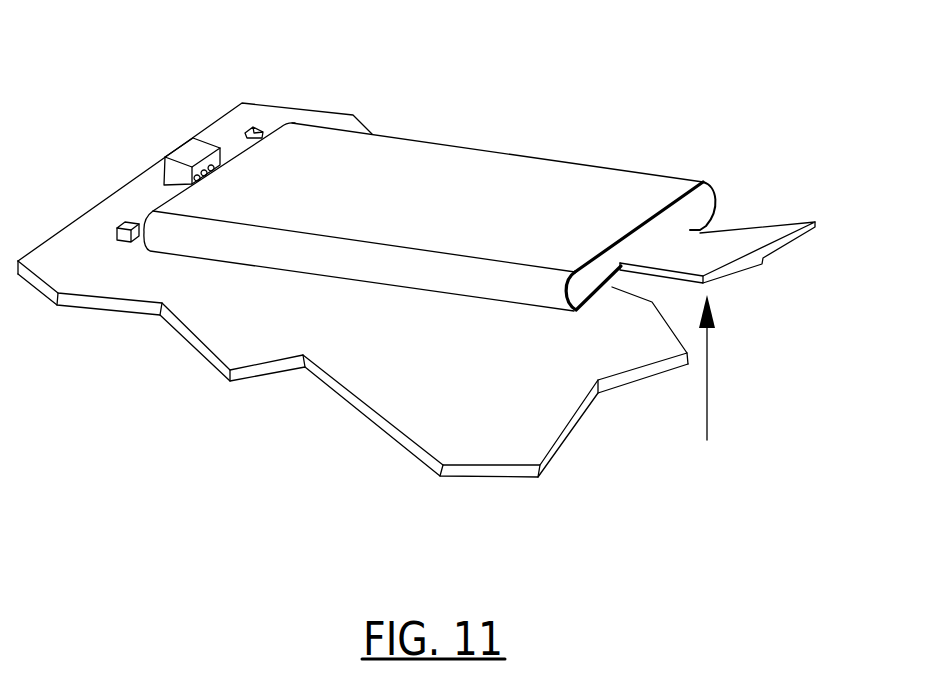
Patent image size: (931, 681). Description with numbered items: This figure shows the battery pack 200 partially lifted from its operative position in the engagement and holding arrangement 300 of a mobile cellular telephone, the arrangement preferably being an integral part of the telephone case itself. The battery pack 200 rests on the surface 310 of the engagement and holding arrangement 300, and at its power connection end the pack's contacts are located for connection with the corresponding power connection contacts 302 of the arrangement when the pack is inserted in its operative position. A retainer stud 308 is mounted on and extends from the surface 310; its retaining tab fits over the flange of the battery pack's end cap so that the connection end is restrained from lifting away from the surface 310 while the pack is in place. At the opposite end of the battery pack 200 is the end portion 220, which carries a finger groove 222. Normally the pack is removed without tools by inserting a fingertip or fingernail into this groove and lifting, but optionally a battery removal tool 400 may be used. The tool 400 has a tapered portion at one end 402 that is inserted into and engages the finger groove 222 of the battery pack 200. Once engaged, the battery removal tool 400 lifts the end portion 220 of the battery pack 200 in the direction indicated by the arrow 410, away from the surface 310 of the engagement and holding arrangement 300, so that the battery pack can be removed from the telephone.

The battery pack 200 is at (445, 126).
The end portion of the battery pack 220 is at (633, 155).
The finger groove 222 is at (623, 273).
The engagement and holding arrangement 300 is at (340, 407).
The power connection contacts 302 is at (176, 141).
The retainer stud 308 is at (119, 246).
The surface of the engagement and holding arrangement 310 is at (488, 395).
The battery removal tool 400 is at (778, 287).
The tapered portion at one end of the battery removal tool 402 is at (680, 233).
The arrow 410 is at (710, 367).